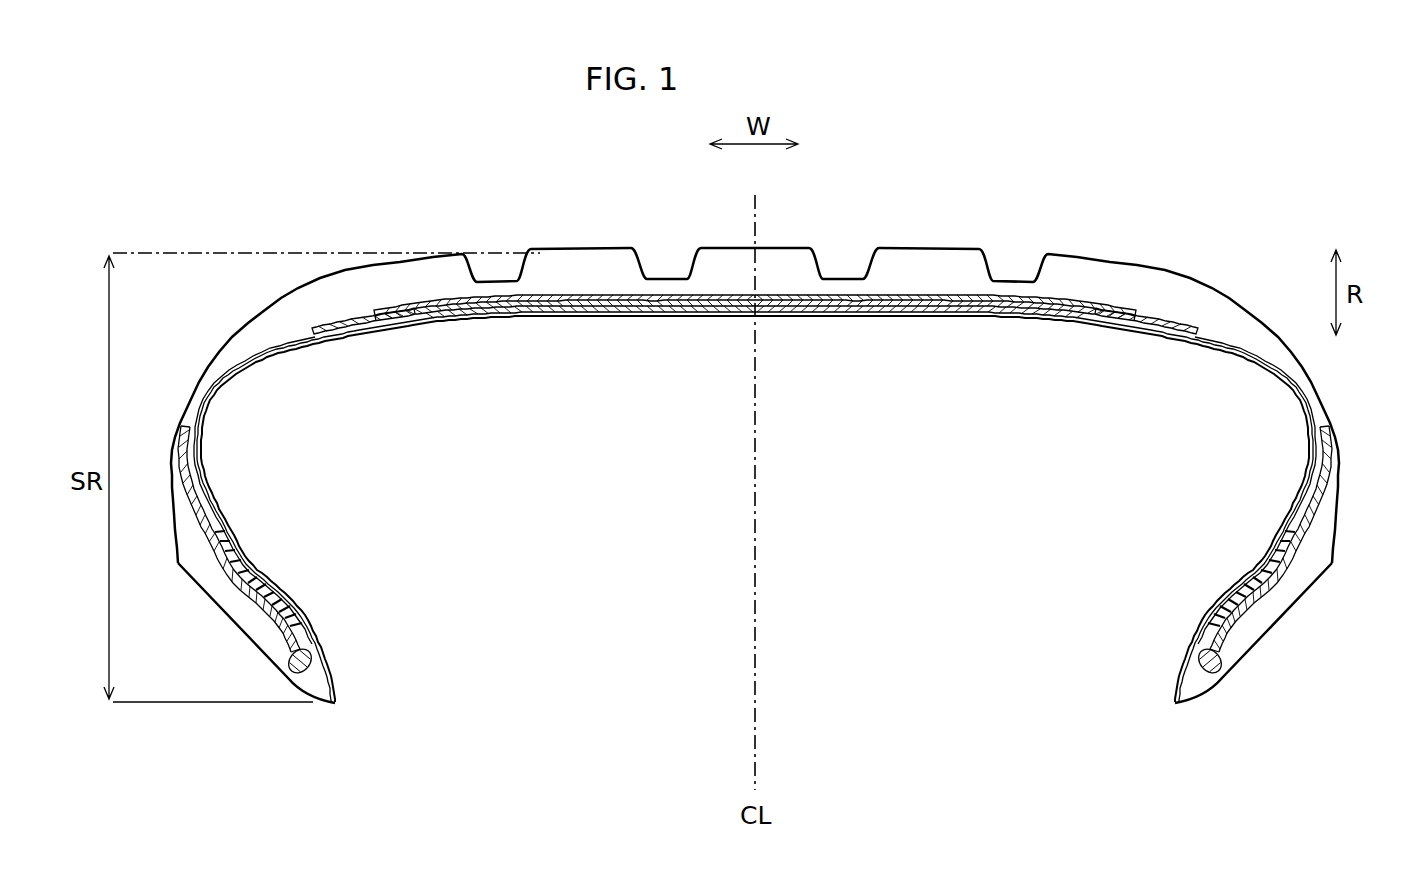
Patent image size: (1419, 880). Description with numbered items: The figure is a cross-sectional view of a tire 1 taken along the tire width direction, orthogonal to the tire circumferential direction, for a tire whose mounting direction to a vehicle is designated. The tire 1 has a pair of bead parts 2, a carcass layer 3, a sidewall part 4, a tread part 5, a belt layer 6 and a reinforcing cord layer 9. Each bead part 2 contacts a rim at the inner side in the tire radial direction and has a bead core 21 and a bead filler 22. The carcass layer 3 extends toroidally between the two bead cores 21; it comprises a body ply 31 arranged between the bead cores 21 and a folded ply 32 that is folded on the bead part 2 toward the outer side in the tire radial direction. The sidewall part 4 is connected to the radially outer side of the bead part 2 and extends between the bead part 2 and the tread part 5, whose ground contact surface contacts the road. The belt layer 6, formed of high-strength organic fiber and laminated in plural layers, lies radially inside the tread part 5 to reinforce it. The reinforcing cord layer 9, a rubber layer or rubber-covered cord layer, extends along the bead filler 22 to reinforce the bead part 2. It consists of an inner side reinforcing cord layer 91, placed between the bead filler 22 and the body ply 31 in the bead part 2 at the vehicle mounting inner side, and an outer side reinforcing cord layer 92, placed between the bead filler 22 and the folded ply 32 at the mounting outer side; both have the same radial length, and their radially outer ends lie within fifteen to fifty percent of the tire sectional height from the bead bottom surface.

The tire 1 is at (949, 164).
The bead part 2 is at (764, 659).
The bead core 21 is at (282, 684).
The bead filler 22 is at (285, 632).
The carcass layer 3 is at (786, 441).
The body ply 31 is at (1213, 333).
The folded ply 32 is at (1322, 428).
The sidewall part 4 is at (1351, 466).
The tread part 5 is at (1074, 241).
The belt layer 6 is at (570, 296).
The reinforcing cord layer 9 is at (745, 604).
The inner side reinforcing cord layer 91 is at (1278, 570).
The outer side reinforcing cord layer 92 is at (228, 574).